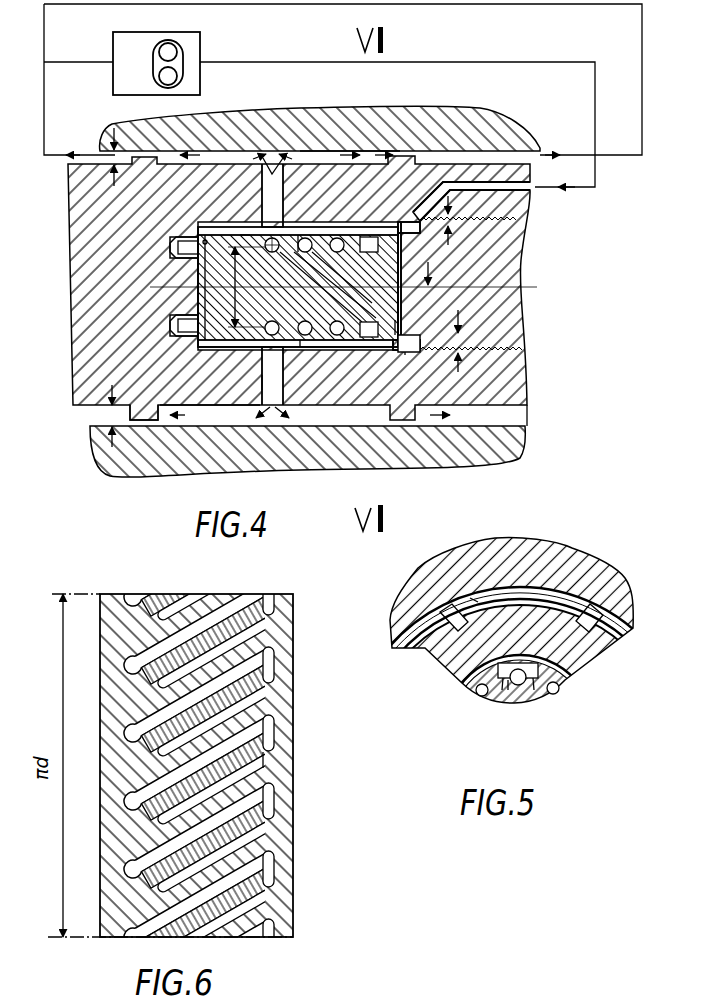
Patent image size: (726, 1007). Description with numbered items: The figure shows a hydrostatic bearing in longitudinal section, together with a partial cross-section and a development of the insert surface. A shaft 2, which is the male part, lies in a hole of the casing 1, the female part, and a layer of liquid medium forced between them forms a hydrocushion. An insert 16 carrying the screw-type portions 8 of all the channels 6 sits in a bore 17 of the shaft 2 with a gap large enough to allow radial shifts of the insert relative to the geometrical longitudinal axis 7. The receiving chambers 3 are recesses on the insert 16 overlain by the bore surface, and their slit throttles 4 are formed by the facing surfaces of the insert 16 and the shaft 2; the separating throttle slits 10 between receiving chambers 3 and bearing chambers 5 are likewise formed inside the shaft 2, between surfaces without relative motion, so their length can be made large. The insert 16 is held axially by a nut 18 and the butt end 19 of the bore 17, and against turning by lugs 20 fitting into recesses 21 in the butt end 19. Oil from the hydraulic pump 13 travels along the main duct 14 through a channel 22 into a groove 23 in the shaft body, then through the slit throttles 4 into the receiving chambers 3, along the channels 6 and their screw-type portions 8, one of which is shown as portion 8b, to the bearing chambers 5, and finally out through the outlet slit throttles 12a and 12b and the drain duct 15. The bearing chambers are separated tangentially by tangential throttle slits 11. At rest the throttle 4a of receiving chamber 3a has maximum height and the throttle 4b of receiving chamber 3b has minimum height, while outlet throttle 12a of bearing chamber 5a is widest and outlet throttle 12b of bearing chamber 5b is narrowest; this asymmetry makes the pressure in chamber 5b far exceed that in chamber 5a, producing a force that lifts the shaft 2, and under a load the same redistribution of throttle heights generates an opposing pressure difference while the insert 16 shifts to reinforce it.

In FIG. 4, the casing 1 is at (505, 442).
In FIG. 5, the casing 1 is at (588, 571).
In FIG. 4, the shaft 2 is at (522, 392).
In FIG. 5, the shaft 2 is at (585, 652).
In FIG. 4, the receiving chambers 3 is at (352, 338).
In FIG. 5, the receiving chambers 3 is at (508, 684).
In FIG. 6, the receiving chambers 3 is at (274, 725).
In FIG. 4, the receiving chamber 3a is at (378, 240).
In FIG. 4, the receiving chamber 3b is at (340, 300).
In FIG. 4, the slit throttles 4 is at (391, 286).
In FIG. 4, the slit throttle 4a is at (417, 222).
In FIG. 4, the slit throttle 4b is at (396, 351).
In FIG. 4, the bearing chambers 5 is at (321, 152).
In FIG. 5, the bearing chambers 5 is at (535, 598).
In FIG. 4, the bearing chamber 5a is at (352, 150).
In FIG. 4, the bearing chamber 5b is at (195, 412).
In FIG. 4, the channels 6 is at (262, 382).
In FIG. 6, the channels 6 is at (252, 778).
In FIG. 4, the geometrical longitudinal axis 7 is at (487, 285).
In FIG. 4, the screw-type portions 8 is at (284, 306).
In FIG. 5, the screw-type portions 8 is at (483, 698).
In FIG. 6, the screw-type portions 8 is at (265, 760).
In FIG. 4, the hole 8b is at (322, 242).
In FIG. 4, the separating throttle slits 10 is at (228, 412).
In FIG. 5, the tangential throttle slits 11 is at (590, 613).
In FIG. 4, the outlet slit throttle 12a is at (146, 151).
In FIG. 4, the outlet slit throttle 12b is at (142, 425).
In FIG. 4, the hydraulic pump 13 is at (153, 64).
In FIG. 4, the main duct 14 is at (563, 62).
In FIG. 4, the drain duct 15 is at (47, 53).
In FIG. 4, the insert 16 is at (198, 292).
In FIG. 5, the insert 16 is at (530, 698).
In FIG. 6, the insert 16 is at (217, 745).
In FIG. 4, the bore 17 is at (212, 350).
In FIG. 4, the nut 18 is at (512, 335).
In FIG. 4, the butt end 19 is at (200, 272).
In FIG. 4, the lugs 20 is at (183, 237).
In FIG. 4, the recesses 21 is at (175, 258).
In FIG. 4, the channel 22 is at (518, 188).
In FIG. 4, the groove 23 is at (412, 350).